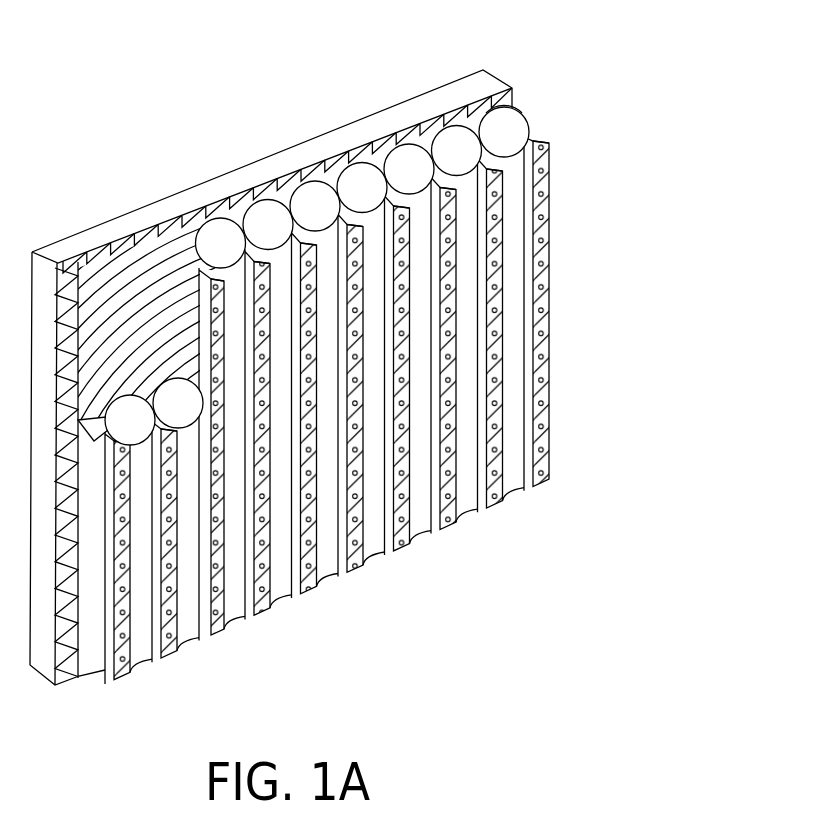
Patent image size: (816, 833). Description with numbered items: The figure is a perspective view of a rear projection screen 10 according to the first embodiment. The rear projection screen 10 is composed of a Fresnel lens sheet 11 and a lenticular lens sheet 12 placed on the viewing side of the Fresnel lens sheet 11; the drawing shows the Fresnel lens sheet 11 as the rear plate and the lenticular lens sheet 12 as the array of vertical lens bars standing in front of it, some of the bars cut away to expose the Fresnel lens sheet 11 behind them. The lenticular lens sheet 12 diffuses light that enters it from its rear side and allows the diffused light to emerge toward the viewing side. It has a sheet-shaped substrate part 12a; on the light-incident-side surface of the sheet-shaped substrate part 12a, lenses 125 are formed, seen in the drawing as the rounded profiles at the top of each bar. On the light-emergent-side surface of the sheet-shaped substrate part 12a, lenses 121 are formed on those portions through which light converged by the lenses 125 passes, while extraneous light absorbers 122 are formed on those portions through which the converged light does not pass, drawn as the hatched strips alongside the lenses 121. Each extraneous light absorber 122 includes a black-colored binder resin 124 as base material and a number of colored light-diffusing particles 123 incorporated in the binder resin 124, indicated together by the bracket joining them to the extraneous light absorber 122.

The rear projection screen 10 is at (594, 67).
The Fresnel lens sheet 11 is at (472, 96).
The lenticular lens sheet 12 is at (357, 365).
The sheet-shaped substrate part 12a is at (530, 124).
The lenses 125 is at (519, 112).
The lenses 121 is at (470, 506).
The extraneous light absorbers 122 is at (327, 409).
The light-diffusing particles 123 is at (397, 551).
The binder resin 124 is at (394, 552).